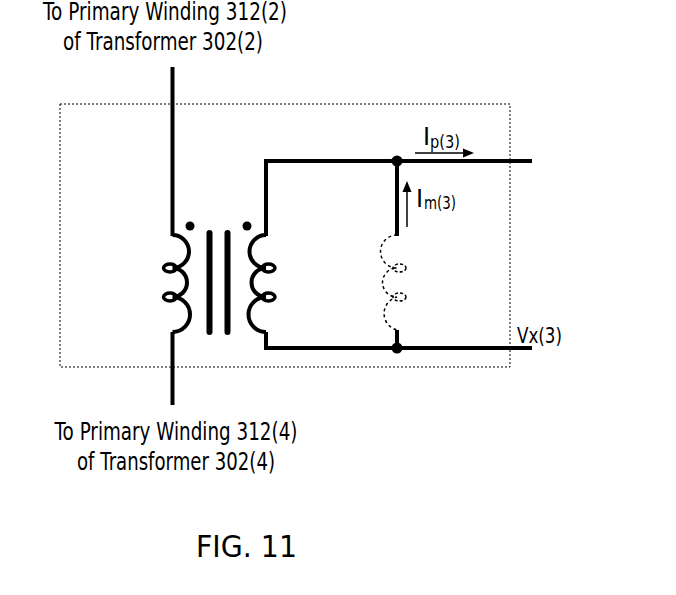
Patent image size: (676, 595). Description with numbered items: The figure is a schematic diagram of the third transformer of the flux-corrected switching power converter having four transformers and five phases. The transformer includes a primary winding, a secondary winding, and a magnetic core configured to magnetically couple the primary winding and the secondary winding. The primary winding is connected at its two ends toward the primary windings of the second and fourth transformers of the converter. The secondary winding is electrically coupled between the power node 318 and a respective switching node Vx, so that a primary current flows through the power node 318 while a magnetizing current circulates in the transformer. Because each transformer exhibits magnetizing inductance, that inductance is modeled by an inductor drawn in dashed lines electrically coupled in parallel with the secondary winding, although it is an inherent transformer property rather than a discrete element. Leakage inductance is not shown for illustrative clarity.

The power node 318 is at (420, 251).